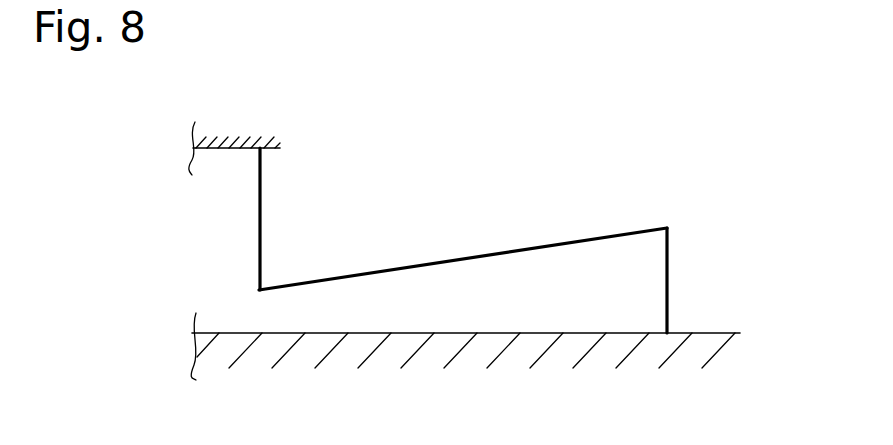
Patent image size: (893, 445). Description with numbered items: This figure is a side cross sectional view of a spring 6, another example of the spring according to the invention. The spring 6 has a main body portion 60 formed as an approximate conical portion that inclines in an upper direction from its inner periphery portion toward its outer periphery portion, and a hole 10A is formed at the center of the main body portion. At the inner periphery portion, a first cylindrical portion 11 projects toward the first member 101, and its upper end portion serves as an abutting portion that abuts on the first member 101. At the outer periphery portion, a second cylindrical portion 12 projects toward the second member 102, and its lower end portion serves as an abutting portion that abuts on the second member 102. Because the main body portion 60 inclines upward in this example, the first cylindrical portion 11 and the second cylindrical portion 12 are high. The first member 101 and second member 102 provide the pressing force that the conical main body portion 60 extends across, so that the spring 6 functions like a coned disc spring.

The spring 6 is at (504, 221).
The hole 10A is at (218, 183).
The first cylindrical portion 11 is at (261, 198).
The second cylindrical portion 12 is at (668, 290).
The main body portion 60 is at (452, 260).
The first member 101 is at (245, 143).
The second member 102 is at (299, 355).